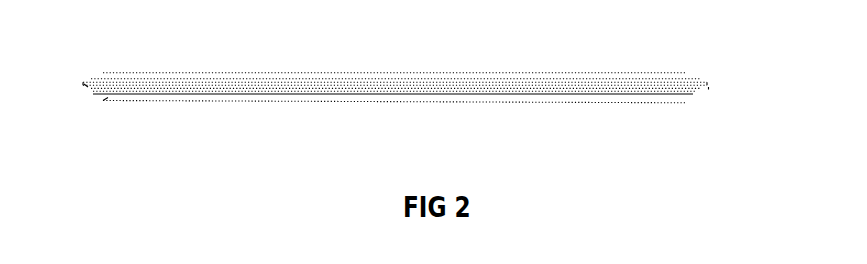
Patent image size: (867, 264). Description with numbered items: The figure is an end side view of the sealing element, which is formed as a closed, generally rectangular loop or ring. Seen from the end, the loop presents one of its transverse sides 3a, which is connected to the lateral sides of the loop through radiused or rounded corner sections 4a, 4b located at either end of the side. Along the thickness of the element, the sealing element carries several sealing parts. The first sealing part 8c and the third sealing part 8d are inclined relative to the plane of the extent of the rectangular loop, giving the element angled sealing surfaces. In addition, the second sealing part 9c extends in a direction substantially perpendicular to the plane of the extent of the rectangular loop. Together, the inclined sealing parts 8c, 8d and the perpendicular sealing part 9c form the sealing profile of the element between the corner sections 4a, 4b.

The transverse side 3a is at (345, 71).
The second sealing part 9c is at (211, 80).
The third sealing part 8d is at (523, 72).
The first sealing part 8c is at (520, 95).
The corner section 4a is at (122, 103).
The corner section 4b is at (680, 101).